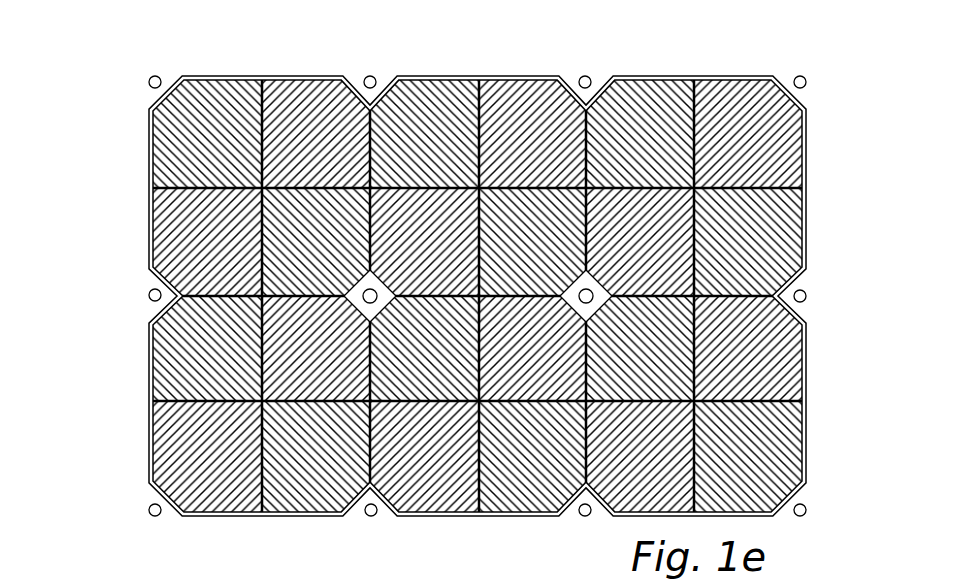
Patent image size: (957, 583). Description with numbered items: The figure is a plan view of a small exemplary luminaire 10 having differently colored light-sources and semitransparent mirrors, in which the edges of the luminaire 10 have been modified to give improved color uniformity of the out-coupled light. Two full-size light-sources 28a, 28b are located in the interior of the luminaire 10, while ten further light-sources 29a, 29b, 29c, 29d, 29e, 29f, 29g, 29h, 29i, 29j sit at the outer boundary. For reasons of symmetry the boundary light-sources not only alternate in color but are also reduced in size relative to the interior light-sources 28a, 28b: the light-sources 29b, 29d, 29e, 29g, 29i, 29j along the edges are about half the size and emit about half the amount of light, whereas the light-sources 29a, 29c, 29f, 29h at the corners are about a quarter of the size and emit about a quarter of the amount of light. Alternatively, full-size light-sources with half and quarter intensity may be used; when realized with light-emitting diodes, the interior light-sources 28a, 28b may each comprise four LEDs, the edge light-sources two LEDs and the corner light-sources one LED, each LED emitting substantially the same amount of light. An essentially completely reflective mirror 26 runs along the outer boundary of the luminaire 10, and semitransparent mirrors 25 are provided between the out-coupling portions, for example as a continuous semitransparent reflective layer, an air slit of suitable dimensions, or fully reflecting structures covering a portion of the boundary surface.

The luminaire 10 is at (464, 303).
The semitransparent mirror 25 is at (522, 168).
The reflective mirror 26 is at (240, 69).
The light-source 28a is at (343, 278).
The light-source 28b is at (591, 274).
The light-source 29a is at (798, 75).
The light-source 29b is at (798, 289).
The light-source 29c is at (798, 503).
The light-source 29d is at (572, 508).
The light-source 29e is at (364, 508).
The light-source 29f is at (143, 507).
The light-source 29g is at (141, 288).
The light-source 29h is at (141, 77).
The light-source 29i is at (361, 68).
The light-source 29j is at (576, 68).